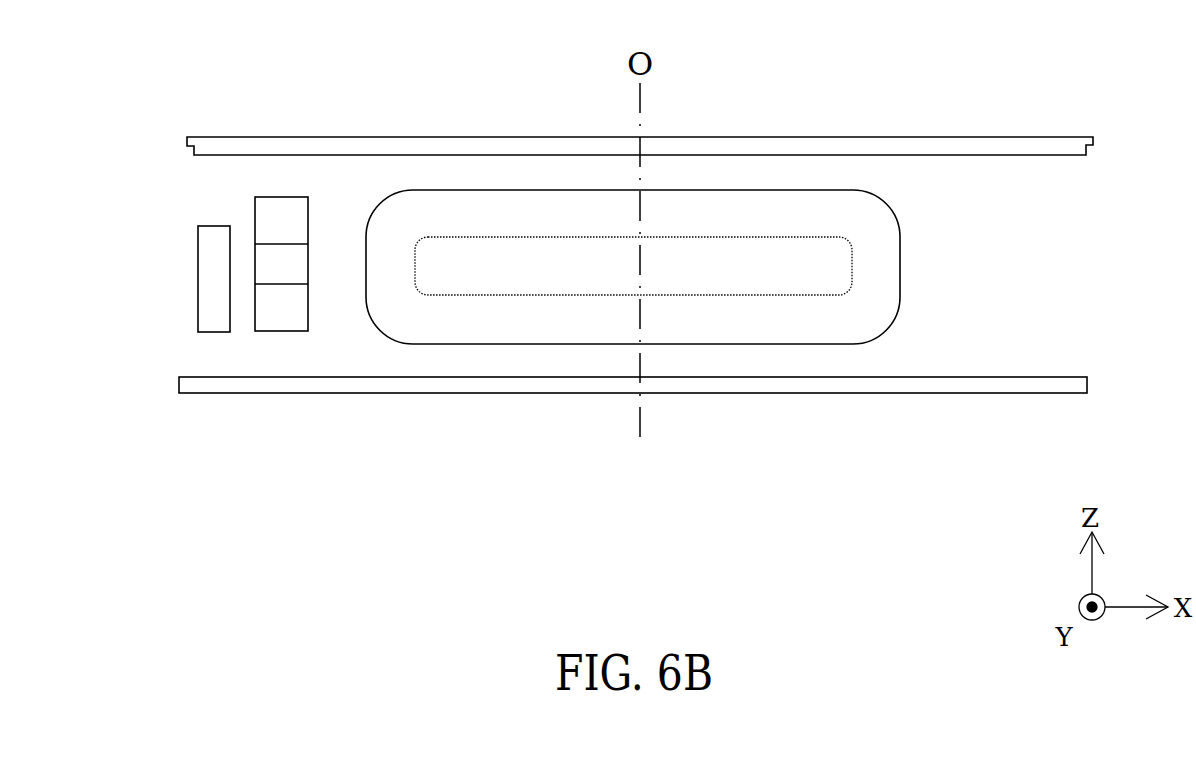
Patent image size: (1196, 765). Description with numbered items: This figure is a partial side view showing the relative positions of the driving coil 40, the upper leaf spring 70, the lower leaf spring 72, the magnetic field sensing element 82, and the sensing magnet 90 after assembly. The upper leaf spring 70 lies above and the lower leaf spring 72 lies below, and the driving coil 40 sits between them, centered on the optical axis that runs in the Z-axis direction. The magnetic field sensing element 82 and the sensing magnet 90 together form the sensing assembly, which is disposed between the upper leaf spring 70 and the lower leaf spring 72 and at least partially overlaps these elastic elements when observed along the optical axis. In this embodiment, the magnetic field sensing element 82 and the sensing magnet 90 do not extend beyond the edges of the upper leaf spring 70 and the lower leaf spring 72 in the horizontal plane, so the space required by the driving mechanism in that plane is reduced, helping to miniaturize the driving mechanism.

The upper leaf spring 70 is at (1093, 143).
The lower leaf spring 72 is at (1070, 386).
The driving coil 40 is at (882, 268).
The magnetic field sensing element 82 is at (212, 279).
The sensing magnet 90 is at (282, 317).